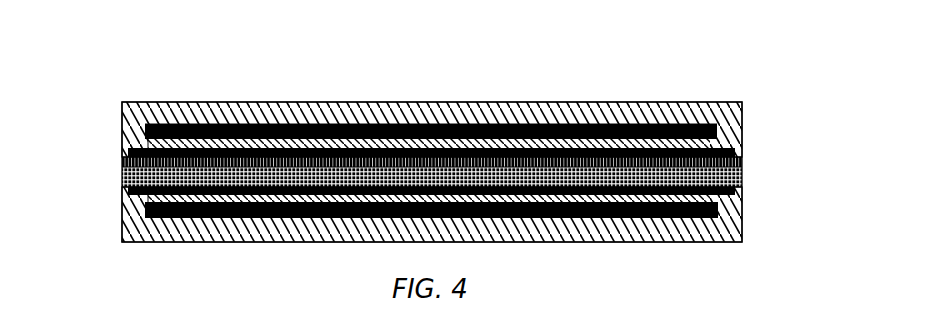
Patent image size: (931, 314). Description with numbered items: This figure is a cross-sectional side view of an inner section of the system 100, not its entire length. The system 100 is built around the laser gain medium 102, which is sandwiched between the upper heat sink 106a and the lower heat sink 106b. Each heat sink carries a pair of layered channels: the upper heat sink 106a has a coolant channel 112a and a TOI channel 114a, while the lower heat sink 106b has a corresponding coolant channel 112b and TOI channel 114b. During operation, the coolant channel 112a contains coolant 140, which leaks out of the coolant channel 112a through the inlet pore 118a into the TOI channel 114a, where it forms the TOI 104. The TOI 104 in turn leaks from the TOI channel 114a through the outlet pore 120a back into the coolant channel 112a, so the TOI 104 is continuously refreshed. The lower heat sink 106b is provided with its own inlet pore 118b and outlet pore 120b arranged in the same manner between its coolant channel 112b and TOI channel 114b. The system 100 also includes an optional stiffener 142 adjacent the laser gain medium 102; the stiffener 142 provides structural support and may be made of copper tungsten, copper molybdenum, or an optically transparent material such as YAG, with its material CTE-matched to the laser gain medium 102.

The system 100 is at (105, 63).
The laser gain medium 102 is at (122, 177).
The TOI 104 is at (742, 157).
The upper heat sink 106a is at (640, 102).
The lower heat sink 106b is at (742, 227).
The coolant channel 112a is at (310, 125).
The coolant channel 112b is at (272, 220).
The TOI channel 114a is at (128, 150).
The TOI channel 114b is at (735, 192).
The inlet pore 118a is at (148, 143).
The inlet pore 118b is at (148, 197).
The outlet pore 120a is at (717, 138).
The outlet pore 120b is at (717, 200).
The coolant 140 is at (500, 123).
The stiffener 142 is at (122, 155).